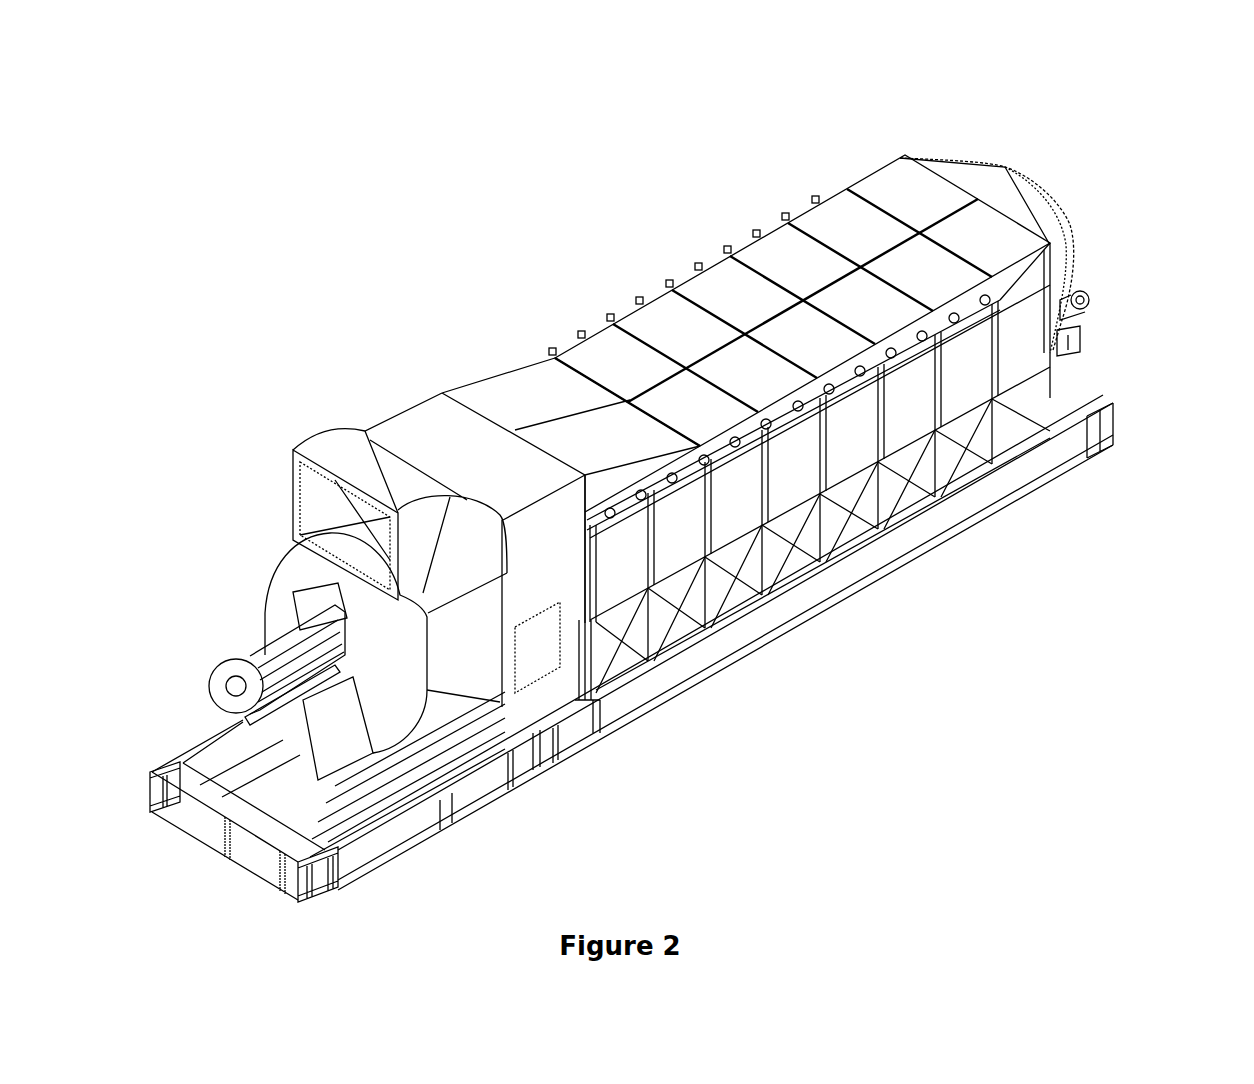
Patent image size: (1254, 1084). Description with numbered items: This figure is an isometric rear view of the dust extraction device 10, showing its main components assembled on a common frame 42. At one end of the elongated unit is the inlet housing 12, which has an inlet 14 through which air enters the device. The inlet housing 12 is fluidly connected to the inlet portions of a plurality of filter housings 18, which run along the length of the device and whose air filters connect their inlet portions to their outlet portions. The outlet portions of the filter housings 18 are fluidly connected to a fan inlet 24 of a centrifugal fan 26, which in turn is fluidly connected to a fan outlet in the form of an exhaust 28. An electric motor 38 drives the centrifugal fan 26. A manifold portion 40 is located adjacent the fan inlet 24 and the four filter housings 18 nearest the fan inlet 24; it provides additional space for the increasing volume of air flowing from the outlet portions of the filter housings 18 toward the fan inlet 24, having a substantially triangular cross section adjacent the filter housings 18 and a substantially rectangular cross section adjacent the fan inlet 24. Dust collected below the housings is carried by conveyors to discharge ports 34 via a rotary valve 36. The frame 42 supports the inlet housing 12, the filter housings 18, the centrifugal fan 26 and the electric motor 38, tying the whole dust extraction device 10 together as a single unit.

The dust extraction device 10 is at (262, 218).
The inlet housing 12 is at (883, 134).
The inlet 14 is at (1005, 183).
The filter housings 18 is at (712, 285).
The fan inlet 24 is at (570, 585).
The centrifugal fan 26 is at (443, 657).
The exhaust 28 is at (330, 455).
The discharge ports 34 is at (1078, 342).
The rotary valve 36 is at (1080, 300).
The electric motor 38 is at (275, 635).
The manifold portion 40 is at (416, 374).
The frame 42 is at (780, 610).